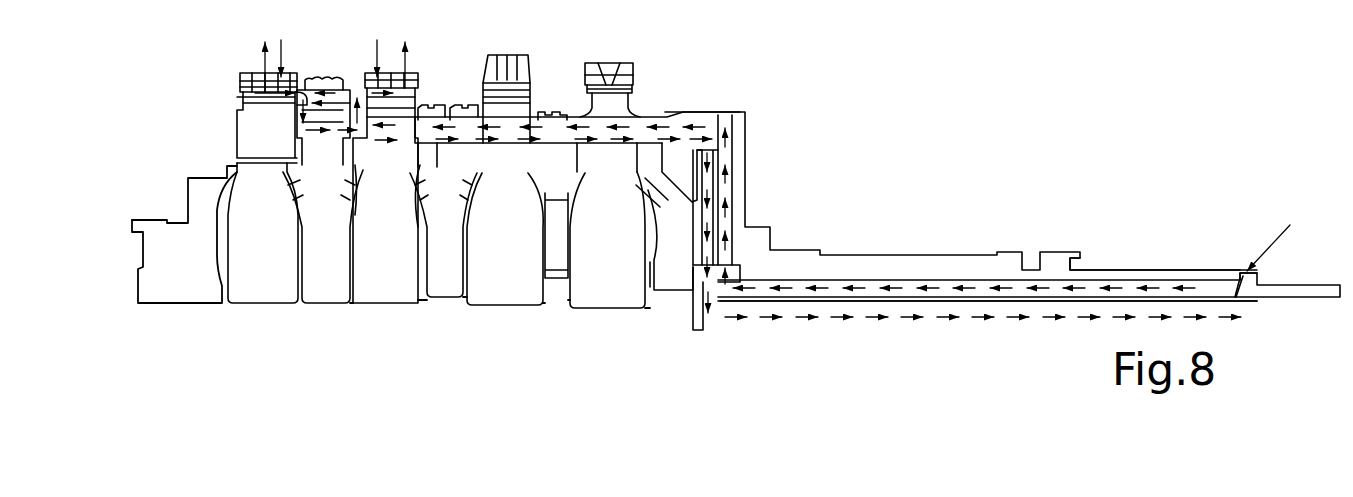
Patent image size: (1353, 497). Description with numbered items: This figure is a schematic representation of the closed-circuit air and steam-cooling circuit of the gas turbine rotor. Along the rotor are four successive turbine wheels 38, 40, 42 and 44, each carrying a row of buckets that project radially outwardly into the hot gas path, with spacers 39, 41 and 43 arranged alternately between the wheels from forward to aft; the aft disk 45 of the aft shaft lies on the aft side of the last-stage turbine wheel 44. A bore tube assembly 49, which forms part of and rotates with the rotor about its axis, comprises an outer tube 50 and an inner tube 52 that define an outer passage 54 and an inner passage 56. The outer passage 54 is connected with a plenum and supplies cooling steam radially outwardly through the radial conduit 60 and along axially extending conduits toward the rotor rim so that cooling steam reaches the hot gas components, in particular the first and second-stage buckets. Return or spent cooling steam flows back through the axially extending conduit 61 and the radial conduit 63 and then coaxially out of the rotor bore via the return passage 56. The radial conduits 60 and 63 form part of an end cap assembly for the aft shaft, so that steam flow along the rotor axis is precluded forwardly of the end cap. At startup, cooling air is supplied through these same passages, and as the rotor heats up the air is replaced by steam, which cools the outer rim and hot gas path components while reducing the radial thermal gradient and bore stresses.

The turbine wheel 38 is at (258, 295).
The spacer 39 is at (325, 298).
The turbine wheel 40 is at (387, 285).
The spacer 41 is at (450, 297).
The turbine wheel 42 is at (515, 288).
The spacer 43 is at (552, 268).
The turbine wheel 44 is at (610, 300).
The aft disk 45 is at (678, 277).
The bore tube assembly 49 is at (1120, 270).
The outer tube 50 is at (1220, 283).
The inner tube 52 is at (987, 300).
The outer passage 54 is at (920, 287).
The inner passage 56 is at (942, 318).
The radial conduit 60 is at (727, 168).
The axially extending conduit 61 is at (558, 105).
The radial conduit 63 is at (712, 203).